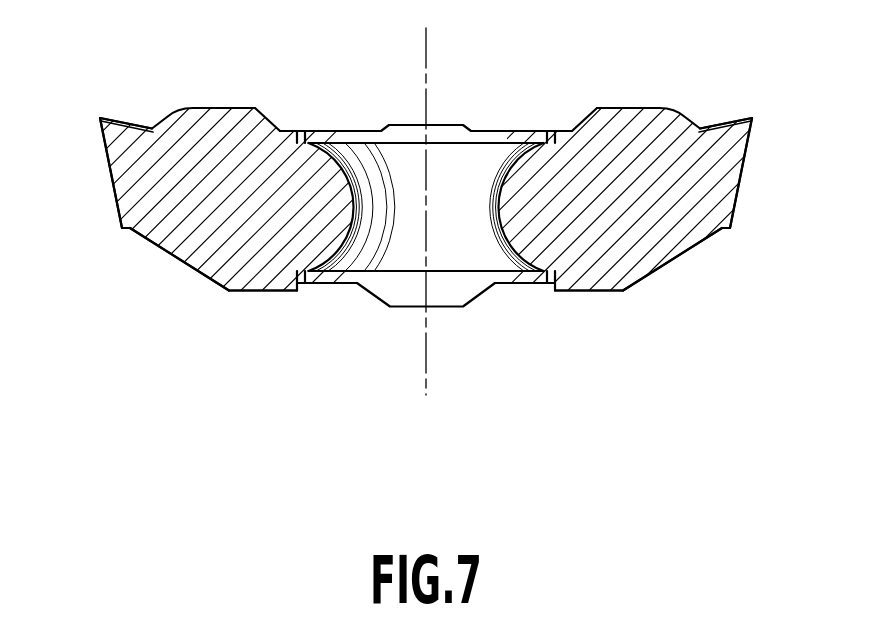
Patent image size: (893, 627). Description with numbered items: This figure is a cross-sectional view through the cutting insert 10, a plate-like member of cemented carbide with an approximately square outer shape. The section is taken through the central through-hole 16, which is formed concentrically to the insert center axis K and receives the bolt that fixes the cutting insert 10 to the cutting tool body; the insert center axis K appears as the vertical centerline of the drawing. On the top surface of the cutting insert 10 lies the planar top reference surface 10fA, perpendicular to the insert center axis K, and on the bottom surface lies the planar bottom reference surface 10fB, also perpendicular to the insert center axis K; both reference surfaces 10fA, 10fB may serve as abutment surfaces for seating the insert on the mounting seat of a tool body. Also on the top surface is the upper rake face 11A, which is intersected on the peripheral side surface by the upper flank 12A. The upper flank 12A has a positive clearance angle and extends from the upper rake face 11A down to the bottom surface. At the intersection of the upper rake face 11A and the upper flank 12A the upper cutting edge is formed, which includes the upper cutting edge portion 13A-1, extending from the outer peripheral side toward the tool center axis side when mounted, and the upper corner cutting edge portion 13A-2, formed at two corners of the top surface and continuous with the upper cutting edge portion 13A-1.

The cutting insert 10 is at (651, 319).
The top reference surface 10fA is at (223, 108).
The bottom reference surface 10fB is at (263, 291).
The upper rake face 11A is at (102, 142).
The upper flank 12A is at (112, 183).
The upper cutting edge portion 13A-1 is at (134, 127).
The upper corner cutting edge portion 13A-2 is at (100, 117).
The central through-hole 16 is at (362, 198).
The insert center axis K is at (427, 57).